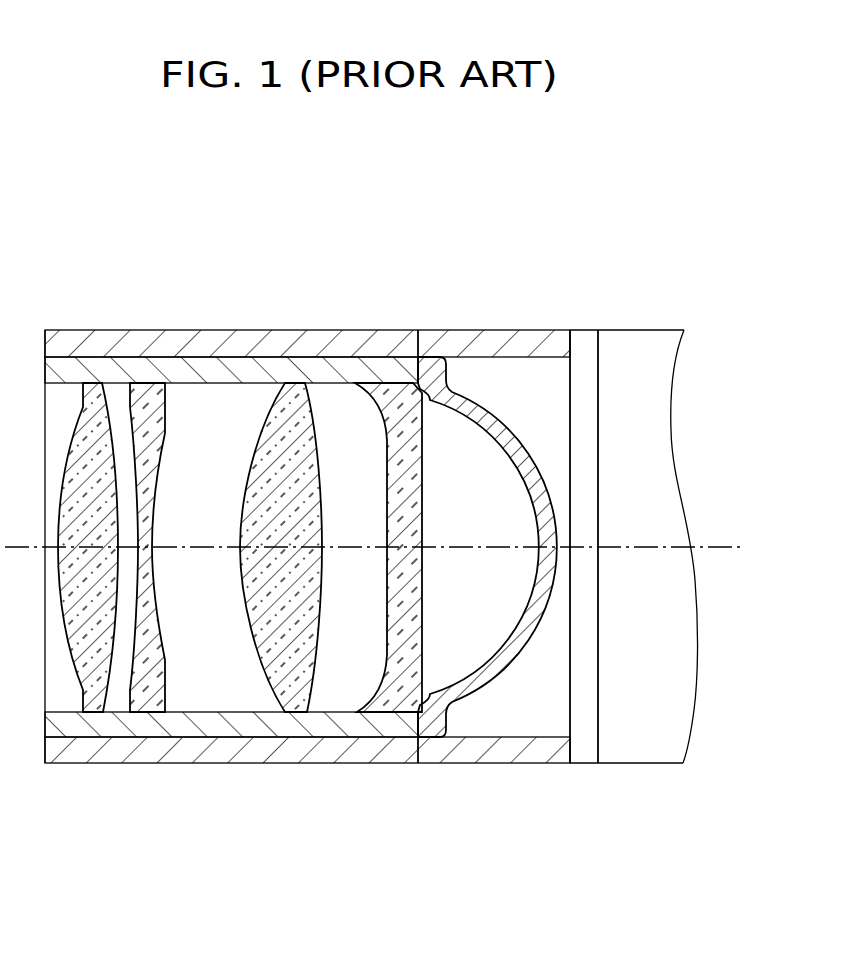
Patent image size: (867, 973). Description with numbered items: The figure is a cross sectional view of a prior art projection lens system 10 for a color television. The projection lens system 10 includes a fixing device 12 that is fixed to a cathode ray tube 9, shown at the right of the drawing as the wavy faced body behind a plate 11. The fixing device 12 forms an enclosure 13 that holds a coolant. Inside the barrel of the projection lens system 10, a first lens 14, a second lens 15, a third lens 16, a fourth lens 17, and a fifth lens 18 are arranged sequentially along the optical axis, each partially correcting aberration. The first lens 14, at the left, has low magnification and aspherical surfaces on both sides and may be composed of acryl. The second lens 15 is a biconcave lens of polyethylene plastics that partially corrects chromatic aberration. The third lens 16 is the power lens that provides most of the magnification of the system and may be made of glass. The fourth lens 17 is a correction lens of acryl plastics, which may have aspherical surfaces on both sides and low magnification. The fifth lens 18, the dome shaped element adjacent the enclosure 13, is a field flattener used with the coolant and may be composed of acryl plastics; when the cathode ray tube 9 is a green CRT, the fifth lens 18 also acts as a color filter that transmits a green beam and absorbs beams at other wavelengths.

The cathode ray tube 9 is at (681, 652).
The projection lens system 10 is at (570, 782).
The transparent plate 11 is at (584, 428).
The fixing device 12 is at (500, 330).
The enclosure 13 is at (553, 403).
The first lens 14 is at (93, 395).
The second lens 15 is at (152, 397).
The third lens 16 is at (297, 400).
The fourth lens 17 is at (383, 393).
The fifth lens 18 is at (438, 370).